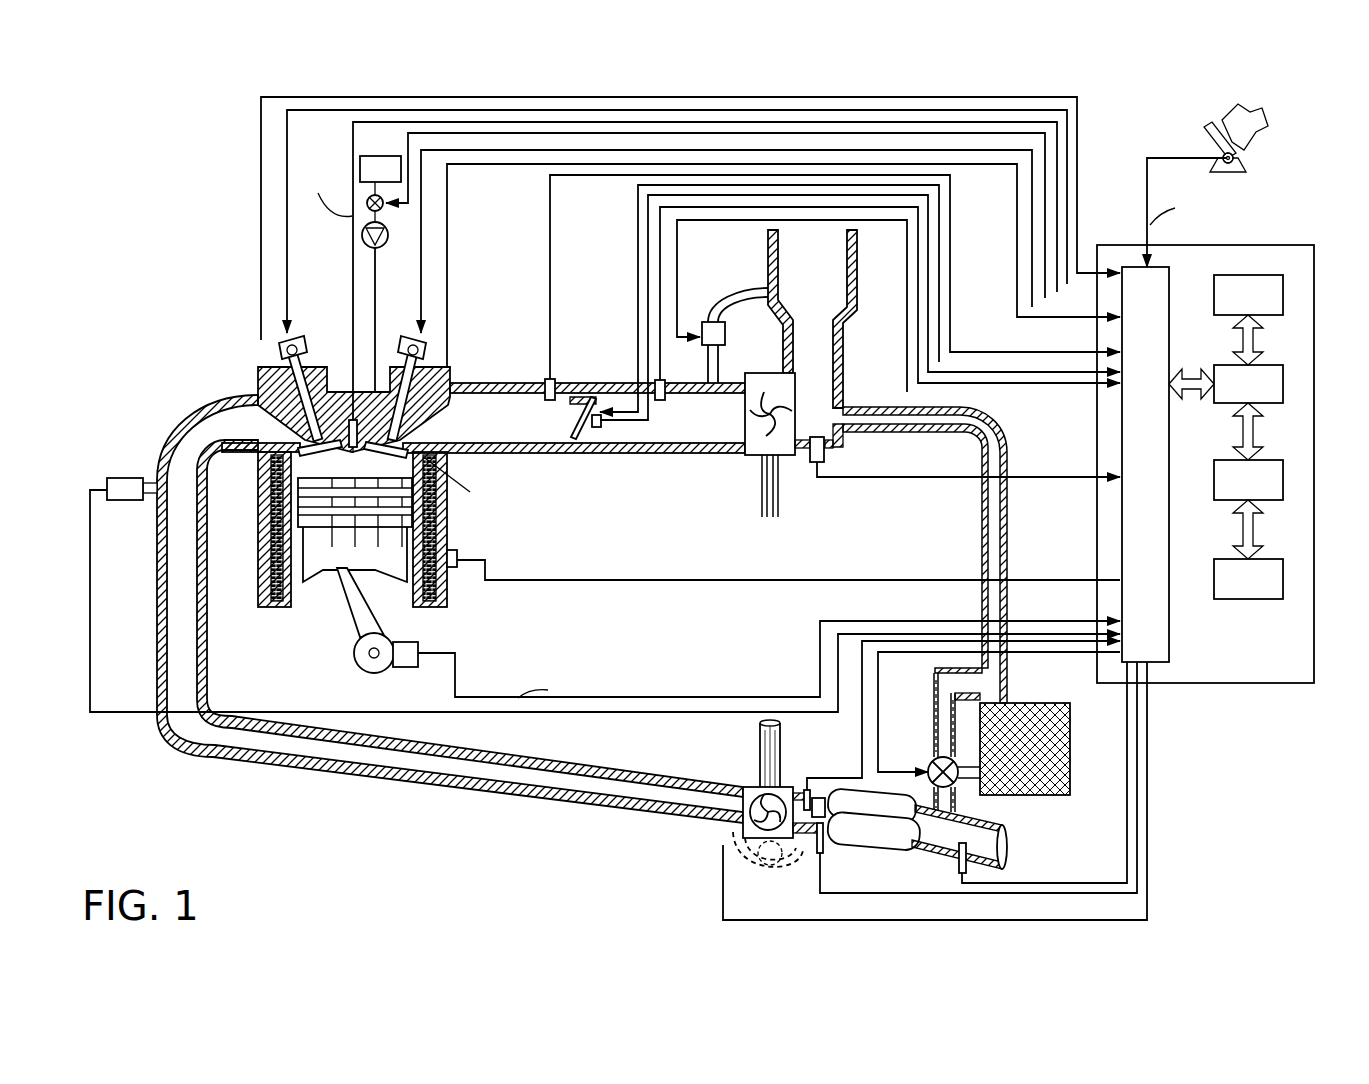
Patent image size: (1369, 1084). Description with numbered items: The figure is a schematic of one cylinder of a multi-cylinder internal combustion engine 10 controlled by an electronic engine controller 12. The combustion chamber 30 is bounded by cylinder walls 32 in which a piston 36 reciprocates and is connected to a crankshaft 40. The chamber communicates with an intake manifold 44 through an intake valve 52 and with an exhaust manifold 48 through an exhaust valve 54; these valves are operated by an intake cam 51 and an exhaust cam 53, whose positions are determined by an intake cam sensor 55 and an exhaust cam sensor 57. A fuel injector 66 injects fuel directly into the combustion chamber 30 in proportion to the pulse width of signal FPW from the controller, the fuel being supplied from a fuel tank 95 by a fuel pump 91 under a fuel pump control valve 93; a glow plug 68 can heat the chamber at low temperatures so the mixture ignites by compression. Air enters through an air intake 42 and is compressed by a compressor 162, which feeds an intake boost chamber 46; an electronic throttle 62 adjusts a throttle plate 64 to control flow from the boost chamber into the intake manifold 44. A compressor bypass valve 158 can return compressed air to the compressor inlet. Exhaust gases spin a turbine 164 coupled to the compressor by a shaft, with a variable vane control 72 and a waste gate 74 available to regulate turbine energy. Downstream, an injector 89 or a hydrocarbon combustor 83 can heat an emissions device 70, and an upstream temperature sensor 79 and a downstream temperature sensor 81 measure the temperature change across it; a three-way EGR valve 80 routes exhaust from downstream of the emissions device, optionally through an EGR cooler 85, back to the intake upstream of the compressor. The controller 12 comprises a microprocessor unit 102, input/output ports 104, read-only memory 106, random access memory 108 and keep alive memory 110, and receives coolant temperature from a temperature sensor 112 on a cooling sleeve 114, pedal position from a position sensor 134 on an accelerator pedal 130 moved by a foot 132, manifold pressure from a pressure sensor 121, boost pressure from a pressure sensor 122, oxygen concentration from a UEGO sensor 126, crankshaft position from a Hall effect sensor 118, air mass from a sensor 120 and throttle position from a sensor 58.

The internal combustion engine 10 is at (196, 317).
The electronic engine controller 12 is at (1275, 245).
The combustion chamber 30 is at (353, 462).
The cylinder walls 32 is at (297, 592).
The piston 36 is at (340, 562).
The crankshaft 40 is at (365, 668).
The air intake 42 is at (812, 319).
The intake manifold 44 is at (574, 418).
The intake boost chamber 46 is at (676, 421).
The exhaust manifold 48 is at (450, 609).
The intake cam 51 is at (413, 338).
The intake valve 52 is at (400, 437).
The exhaust cam 53 is at (296, 337).
The exhaust valve 54 is at (278, 398).
The intake cam sensor 55 is at (428, 352).
The exhaust cam sensor 57 is at (282, 350).
The throttle position sensor 58 is at (603, 425).
The electronic throttle 62 is at (580, 397).
The throttle plate 64 is at (593, 397).
The fuel injector 66 is at (350, 420).
The glow plug 68 is at (437, 450).
The emissions device 70 is at (880, 852).
The variable vane control 72 is at (753, 830).
The waste gate 74 is at (776, 862).
The upstream temperature sensor 79 is at (818, 848).
The EGR valve 80 is at (930, 762).
The downstream temperature sensor 81 is at (958, 870).
The hydrocarbon combustor 83 is at (830, 790).
The EGR cooler 85 is at (1070, 745).
The injector 89 is at (807, 790).
The fuel pump 91 is at (382, 246).
The fuel pump control valve 93 is at (381, 210).
The fuel tank 95 is at (380, 175).
The microprocessor unit 102 is at (1283, 383).
The input/output ports 104 is at (1175, 270).
The read-only memory 106 is at (1283, 292).
The random access memory 108 is at (1283, 478).
The keep alive memory 110 is at (1283, 576).
The temperature sensor 112 is at (458, 555).
The cooling sleeve 114 is at (272, 520).
The Hall effect sensor 118 is at (402, 668).
The air mass sensor 120 is at (825, 460).
The pressure sensor 121 is at (546, 380).
The pressure sensor 122 is at (682, 365).
The universal exhaust gas oxygen (UEGO) sensor 126 is at (107, 480).
The accelerator pedal 130 is at (1208, 130).
The foot 132 is at (1258, 128).
The position sensor 134 is at (1245, 162).
The compressor bypass valve 158 is at (706, 322).
The compressor 162 is at (745, 452).
The turbine 164 is at (745, 790).